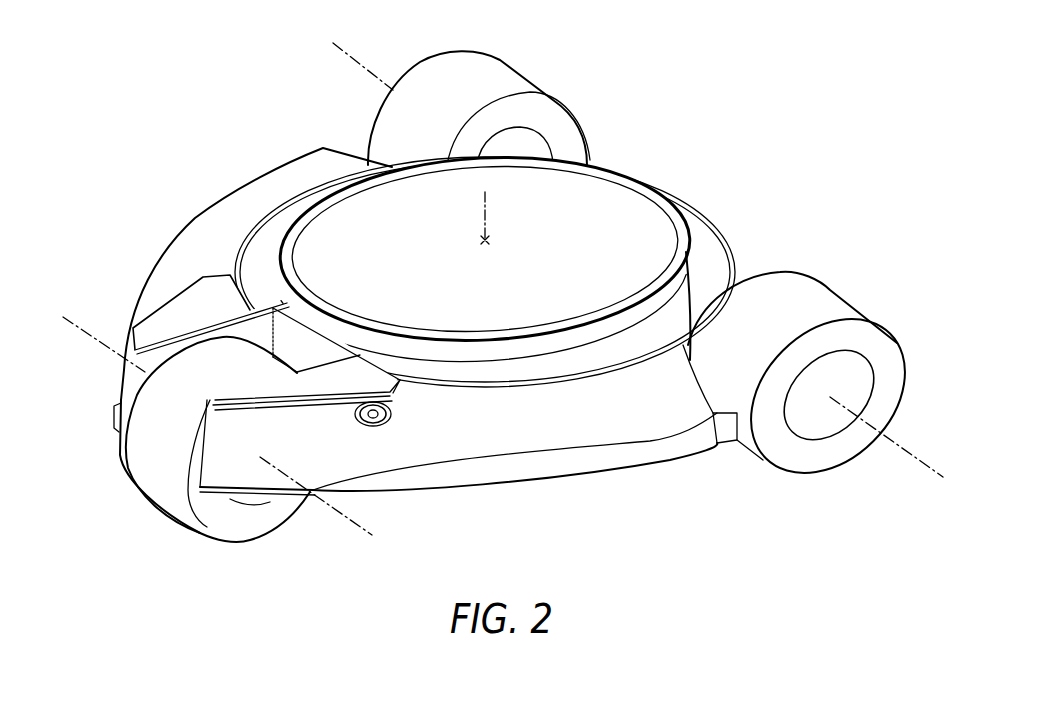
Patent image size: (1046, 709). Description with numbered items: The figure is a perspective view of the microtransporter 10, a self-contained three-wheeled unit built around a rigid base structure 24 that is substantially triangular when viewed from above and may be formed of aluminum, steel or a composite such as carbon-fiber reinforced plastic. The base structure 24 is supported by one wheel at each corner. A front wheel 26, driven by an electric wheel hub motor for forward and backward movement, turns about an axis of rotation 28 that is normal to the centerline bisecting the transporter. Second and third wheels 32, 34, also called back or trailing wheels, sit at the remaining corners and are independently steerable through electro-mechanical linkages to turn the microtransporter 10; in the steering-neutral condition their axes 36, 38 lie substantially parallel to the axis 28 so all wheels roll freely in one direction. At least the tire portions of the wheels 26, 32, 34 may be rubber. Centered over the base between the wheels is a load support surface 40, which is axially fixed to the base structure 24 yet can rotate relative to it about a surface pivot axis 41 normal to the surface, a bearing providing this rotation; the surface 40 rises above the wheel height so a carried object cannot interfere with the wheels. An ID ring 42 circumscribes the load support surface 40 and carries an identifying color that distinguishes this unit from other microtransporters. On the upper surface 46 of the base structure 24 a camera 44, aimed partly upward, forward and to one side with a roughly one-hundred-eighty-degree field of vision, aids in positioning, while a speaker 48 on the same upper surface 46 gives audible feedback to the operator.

The microtransporter 10 is at (780, 82).
The base structure 24 is at (607, 477).
The front wheel 26 is at (172, 500).
The axis of rotation 28 is at (98, 343).
The second wheel 32 is at (527, 80).
The third wheel 34 is at (827, 290).
The axis of back wheel 36 is at (347, 50).
The axis of back wheel 38 is at (900, 443).
The load support surface 40 is at (499, 312).
The surface pivot axis 41 is at (487, 228).
The ID ring 42 is at (683, 235).
The camera 44 is at (391, 416).
The upper surface 46 is at (485, 426).
The speaker 48 is at (184, 280).